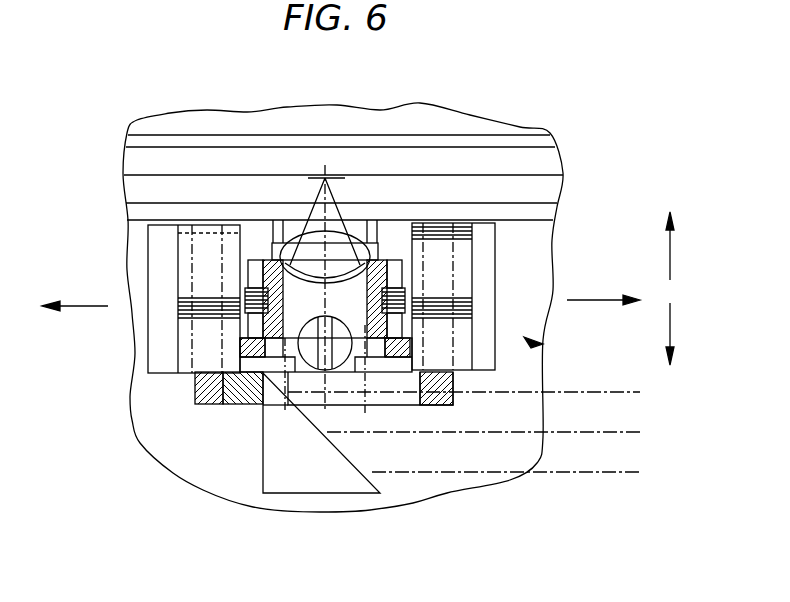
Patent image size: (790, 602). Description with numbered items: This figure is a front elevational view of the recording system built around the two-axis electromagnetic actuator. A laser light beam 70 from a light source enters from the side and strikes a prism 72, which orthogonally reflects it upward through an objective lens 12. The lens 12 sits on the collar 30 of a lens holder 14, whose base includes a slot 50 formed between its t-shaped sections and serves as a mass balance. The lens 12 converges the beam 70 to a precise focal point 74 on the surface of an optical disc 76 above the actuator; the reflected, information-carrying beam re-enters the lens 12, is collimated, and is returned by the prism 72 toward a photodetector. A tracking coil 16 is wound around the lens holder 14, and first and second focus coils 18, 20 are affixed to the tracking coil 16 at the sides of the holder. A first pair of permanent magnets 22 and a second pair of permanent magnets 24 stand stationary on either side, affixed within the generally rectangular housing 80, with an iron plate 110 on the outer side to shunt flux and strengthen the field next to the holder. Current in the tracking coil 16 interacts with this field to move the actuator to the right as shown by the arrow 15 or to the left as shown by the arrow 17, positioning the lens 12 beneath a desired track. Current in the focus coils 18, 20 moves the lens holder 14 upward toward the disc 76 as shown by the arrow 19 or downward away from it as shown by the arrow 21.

The objective lens 12 is at (315, 235).
The lens holder 14 is at (268, 347).
The arrow 15 is at (600, 298).
The tracking coil 16 is at (247, 306).
The arrow 17 is at (72, 308).
The first focus coil 18 is at (252, 272).
The arrow 19 is at (672, 243).
The second focus coil 20 is at (400, 272).
The arrow 21 is at (672, 320).
The first pair of permanent magnets 22 is at (201, 233).
The second pair of permanent magnets 24 is at (437, 233).
The collar 30 is at (340, 250).
The slot 50 is at (330, 328).
The laser light beam 70 is at (605, 392).
The prism 72 is at (275, 465).
The focal point 74 is at (330, 180).
The optical disc 76 is at (550, 187).
The housing 80 is at (263, 373).
The iron plate 110 is at (543, 345).